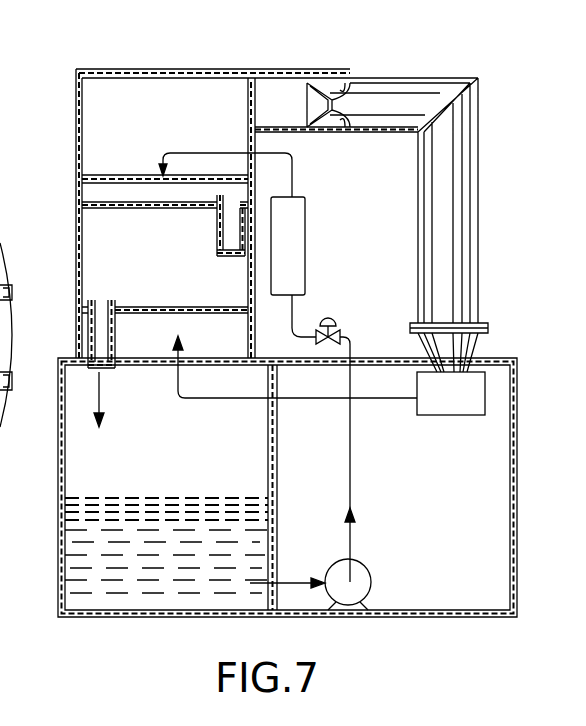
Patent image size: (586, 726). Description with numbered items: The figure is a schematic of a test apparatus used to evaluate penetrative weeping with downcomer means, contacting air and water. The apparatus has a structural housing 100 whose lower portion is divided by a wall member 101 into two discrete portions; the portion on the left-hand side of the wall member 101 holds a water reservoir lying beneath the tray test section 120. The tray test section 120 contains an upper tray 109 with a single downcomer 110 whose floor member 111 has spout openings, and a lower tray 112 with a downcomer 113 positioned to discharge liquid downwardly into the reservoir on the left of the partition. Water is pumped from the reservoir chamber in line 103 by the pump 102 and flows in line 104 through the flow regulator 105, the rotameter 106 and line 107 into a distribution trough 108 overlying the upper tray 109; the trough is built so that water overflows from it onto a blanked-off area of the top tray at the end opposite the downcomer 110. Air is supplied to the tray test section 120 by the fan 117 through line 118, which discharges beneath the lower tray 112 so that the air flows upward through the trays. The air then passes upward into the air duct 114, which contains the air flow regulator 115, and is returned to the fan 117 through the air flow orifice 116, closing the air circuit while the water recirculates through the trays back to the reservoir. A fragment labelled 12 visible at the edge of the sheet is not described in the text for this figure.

The adjacent figure fragment 12 is at (10, 325).
The structural housing 100 is at (430, 612).
The wall member 101 is at (272, 470).
The pump 102 is at (372, 584).
The line 103 is at (298, 590).
The line 104 is at (352, 486).
The flow regulator 105 is at (336, 322).
The rotameter 106 is at (304, 252).
The line 107 is at (222, 142).
The distribution trough 108 is at (122, 163).
The upper tray 109 is at (120, 209).
The downcomer 110 is at (216, 228).
The floor member 111 is at (218, 256).
The lower tray 112 is at (142, 288).
The downcomer 113 is at (112, 345).
The air duct 114 is at (444, 78).
The air flow regulator 115 is at (318, 90).
The air flow orifice 116 is at (482, 326).
The fan 117 is at (466, 400).
The line 118 is at (248, 398).
The tray test section 120 is at (68, 213).